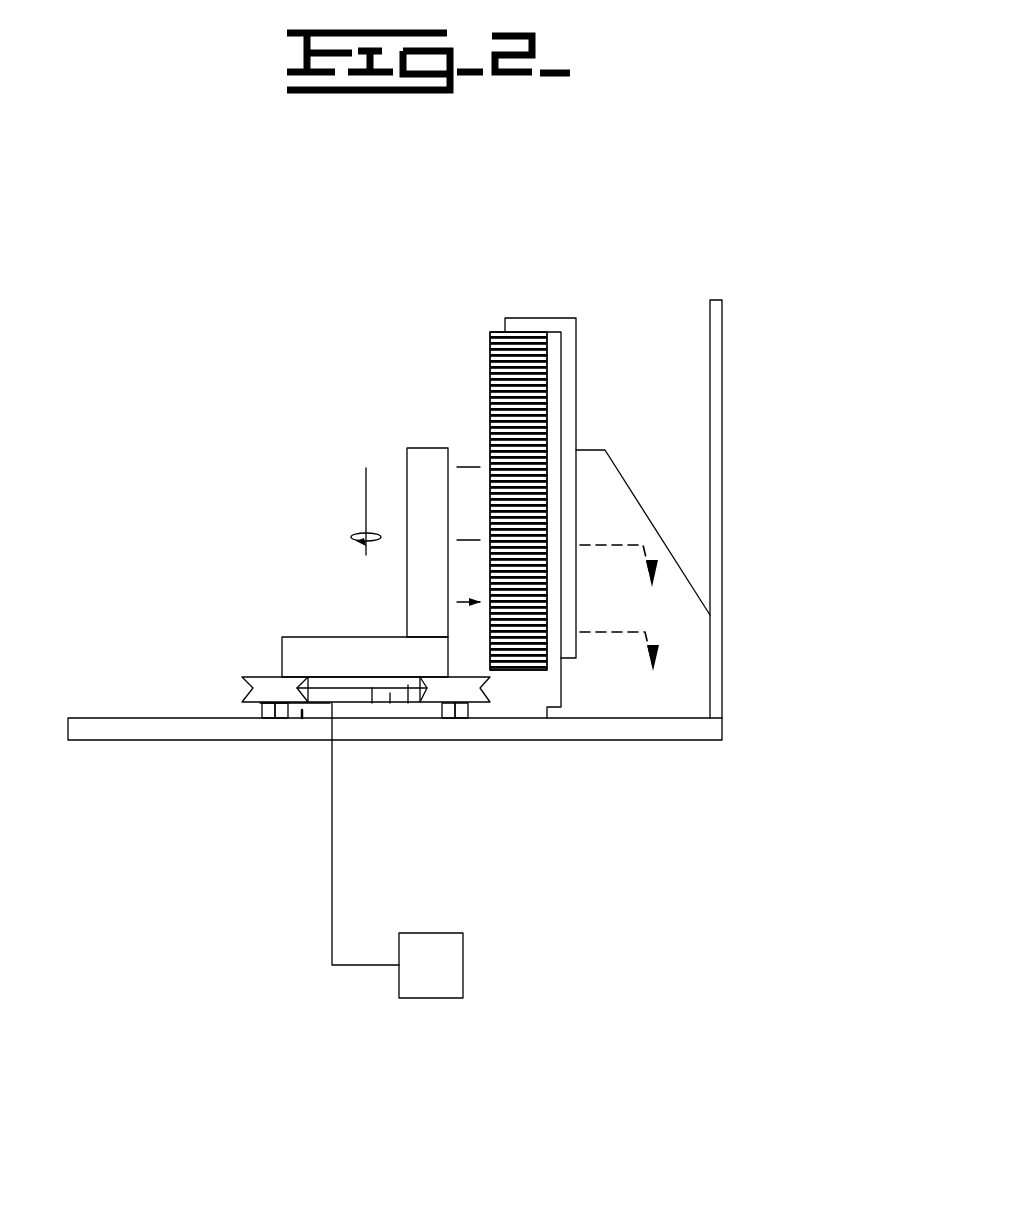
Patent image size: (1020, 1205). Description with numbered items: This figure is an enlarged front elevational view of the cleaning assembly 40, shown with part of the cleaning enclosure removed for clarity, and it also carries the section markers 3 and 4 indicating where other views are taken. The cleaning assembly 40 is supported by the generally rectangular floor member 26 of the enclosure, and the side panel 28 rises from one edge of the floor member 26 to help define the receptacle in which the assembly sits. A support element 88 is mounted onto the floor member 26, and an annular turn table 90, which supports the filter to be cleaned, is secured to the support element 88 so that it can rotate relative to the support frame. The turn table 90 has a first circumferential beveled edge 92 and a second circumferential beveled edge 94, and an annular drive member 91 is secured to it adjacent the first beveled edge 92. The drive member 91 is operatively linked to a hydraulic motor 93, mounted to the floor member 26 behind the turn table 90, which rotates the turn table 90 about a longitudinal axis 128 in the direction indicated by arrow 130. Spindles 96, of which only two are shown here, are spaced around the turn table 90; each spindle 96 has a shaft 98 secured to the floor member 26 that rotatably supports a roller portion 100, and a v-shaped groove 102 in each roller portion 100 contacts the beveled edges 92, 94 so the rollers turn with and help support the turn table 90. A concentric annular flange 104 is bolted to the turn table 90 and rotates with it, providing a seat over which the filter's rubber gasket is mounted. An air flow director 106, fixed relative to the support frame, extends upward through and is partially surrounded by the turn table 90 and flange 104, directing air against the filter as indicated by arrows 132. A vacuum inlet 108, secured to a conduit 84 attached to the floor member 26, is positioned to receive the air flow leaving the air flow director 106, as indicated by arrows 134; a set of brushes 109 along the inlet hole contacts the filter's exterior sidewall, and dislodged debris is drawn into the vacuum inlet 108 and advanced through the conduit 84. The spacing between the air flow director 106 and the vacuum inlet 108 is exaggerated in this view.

The floor member 26 is at (692, 738).
The side panel 28 is at (722, 322).
The conduit 84 is at (610, 488).
The vacuum inlet 108 is at (548, 320).
The brushes 109 is at (498, 332).
The arrows 134 is at (623, 545).
The arrows 132 is at (457, 465).
The air flow director 106 is at (412, 448).
The annular flange 104 is at (283, 642).
The longitudinal axis 128 is at (366, 500).
The arrow 130 is at (360, 537).
The v-shaped groove 102 is at (242, 688).
The turn table 90 is at (378, 677).
The spindles 96 is at (230, 697).
The shaft 98 is at (257, 714).
The roller portion 100 is at (277, 714).
The support element 88 is at (305, 714).
The second circumferential beveled edge 94 is at (408, 704).
The first circumferential beveled edge 92 is at (390, 704).
The drive member 91 is at (372, 704).
The hydraulic motor 93 is at (463, 963).
The cleaning assembly 40 is at (200, 508).
The section line FIG. 3 is at (240, 205).
The section line FIG. 4 is at (457, 420).